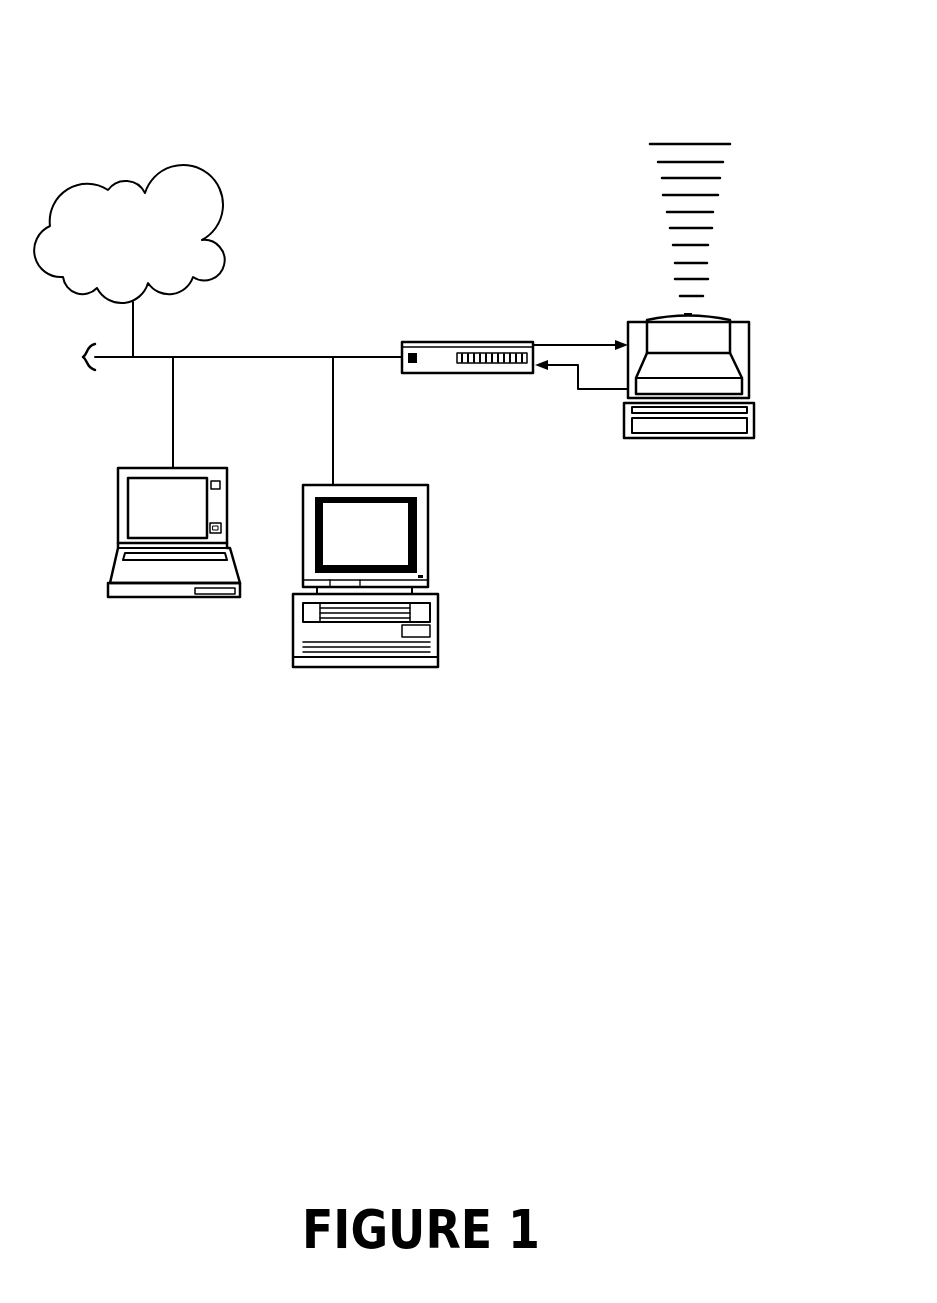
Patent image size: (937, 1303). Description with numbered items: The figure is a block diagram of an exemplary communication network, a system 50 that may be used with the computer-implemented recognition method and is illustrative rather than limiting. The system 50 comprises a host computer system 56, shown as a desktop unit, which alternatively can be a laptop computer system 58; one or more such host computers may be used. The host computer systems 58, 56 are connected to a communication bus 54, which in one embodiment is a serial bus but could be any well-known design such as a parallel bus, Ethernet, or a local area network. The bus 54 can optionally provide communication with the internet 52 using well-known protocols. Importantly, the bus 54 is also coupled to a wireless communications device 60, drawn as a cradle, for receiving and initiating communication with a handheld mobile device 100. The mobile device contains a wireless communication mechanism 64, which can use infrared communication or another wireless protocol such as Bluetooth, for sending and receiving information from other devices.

The system 50 is at (83, 37).
The internet 52 is at (145, 267).
The communication bus 54 is at (292, 357).
The host computer system 56 is at (366, 537).
The laptop computer system 58 is at (170, 504).
The wireless communications device 60 is at (515, 382).
The wireless communication mechanism 64 is at (720, 216).
The handheld computer 100 is at (688, 403).